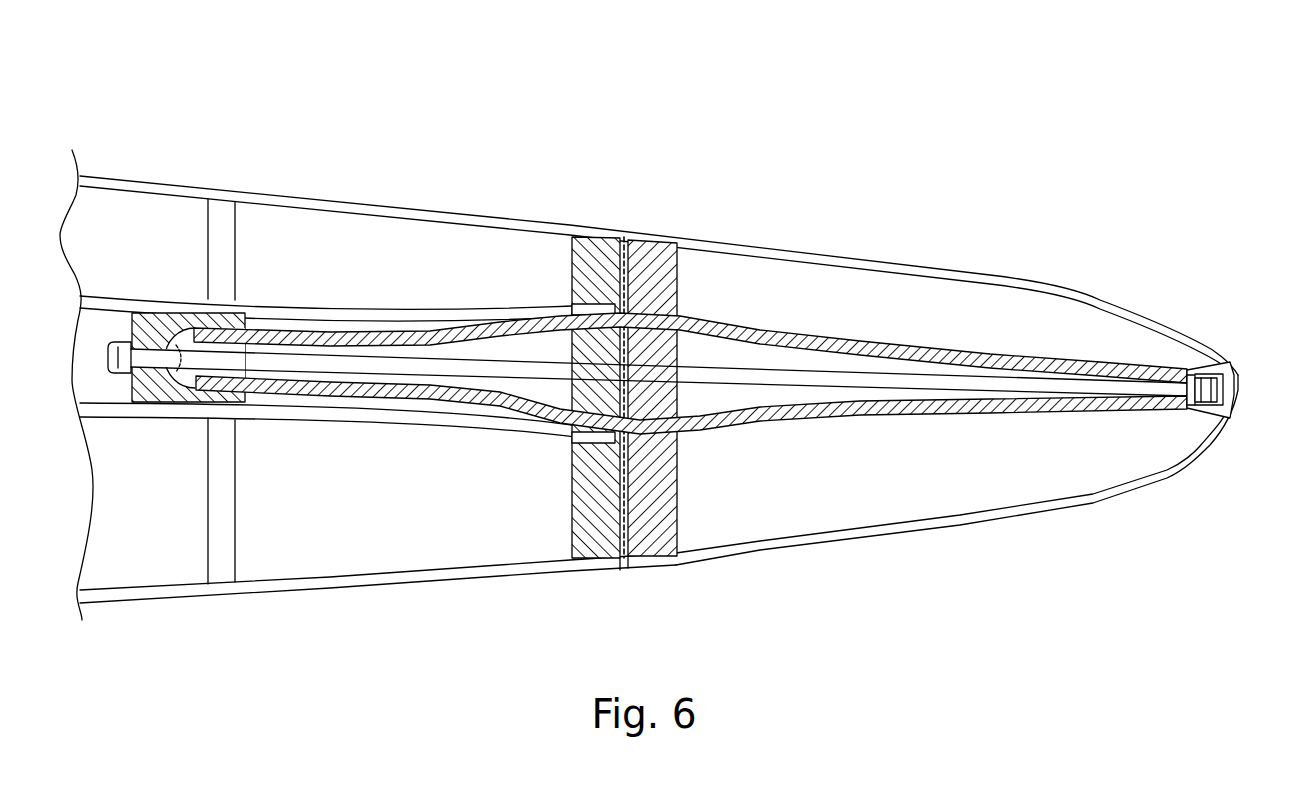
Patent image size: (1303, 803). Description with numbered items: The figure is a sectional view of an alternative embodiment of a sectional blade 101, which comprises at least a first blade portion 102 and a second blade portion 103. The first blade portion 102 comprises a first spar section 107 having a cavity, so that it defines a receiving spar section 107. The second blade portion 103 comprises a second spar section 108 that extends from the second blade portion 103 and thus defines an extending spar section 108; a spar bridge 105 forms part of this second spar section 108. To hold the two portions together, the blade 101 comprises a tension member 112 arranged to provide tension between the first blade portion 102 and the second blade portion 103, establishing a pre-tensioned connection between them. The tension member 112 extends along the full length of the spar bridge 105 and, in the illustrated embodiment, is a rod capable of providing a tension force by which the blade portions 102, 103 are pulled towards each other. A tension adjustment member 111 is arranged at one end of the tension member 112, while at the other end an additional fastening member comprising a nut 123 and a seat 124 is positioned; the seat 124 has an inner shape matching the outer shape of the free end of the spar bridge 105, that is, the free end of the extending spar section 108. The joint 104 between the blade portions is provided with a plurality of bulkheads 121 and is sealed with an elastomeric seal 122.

The sectional blade 101 is at (1100, 150).
The first blade portion 102 is at (405, 578).
The second blade portion 103 is at (907, 535).
The joint 104 is at (623, 571).
The spar bridge 105 is at (593, 258).
The first spar section 107 is at (308, 314).
The second spar section 108 is at (943, 350).
The tension adjustment member 111 is at (1227, 386).
The tension member 112 is at (1107, 390).
The bulkheads 121 is at (658, 350).
The elastomeric seal 122 is at (627, 468).
The nut 123 is at (112, 346).
The seat 124 is at (155, 403).